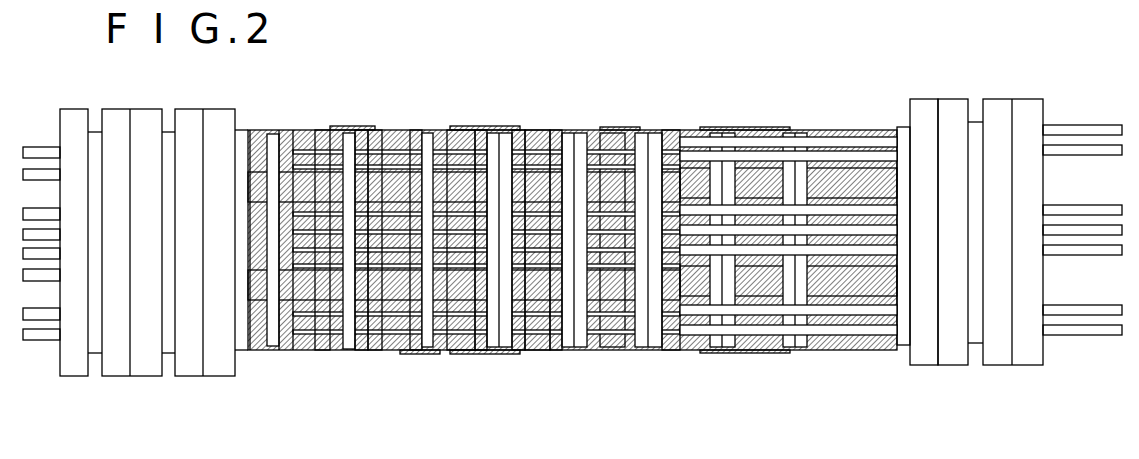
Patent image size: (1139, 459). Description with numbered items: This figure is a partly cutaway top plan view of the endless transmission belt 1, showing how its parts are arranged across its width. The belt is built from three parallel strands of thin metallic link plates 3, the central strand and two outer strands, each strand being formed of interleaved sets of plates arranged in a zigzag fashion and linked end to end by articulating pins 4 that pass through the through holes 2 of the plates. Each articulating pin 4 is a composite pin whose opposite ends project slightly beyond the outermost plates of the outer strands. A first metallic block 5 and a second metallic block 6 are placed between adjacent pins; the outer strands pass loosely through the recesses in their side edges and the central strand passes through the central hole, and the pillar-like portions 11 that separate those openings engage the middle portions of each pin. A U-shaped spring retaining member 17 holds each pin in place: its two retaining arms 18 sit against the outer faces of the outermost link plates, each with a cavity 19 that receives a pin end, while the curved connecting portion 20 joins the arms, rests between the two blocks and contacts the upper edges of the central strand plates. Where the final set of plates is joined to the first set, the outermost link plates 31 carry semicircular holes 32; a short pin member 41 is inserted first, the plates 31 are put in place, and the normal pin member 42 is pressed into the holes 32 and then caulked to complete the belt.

The endless transmission belt 1 is at (696, 98).
The through hole 2 is at (455, 132).
The link plate 3 is at (607, 135).
The articulating pin 4 is at (582, 137).
The first metallic block 5 is at (953, 103).
The second metallic block 6 is at (923, 103).
The pillar-like portion 11 is at (478, 132).
The retaining member 17 is at (975, 122).
The retaining arm 18 is at (820, 345).
The cavity 19 is at (878, 345).
The connecting portion 20 is at (907, 345).
The outermost link plate 31 is at (317, 135).
The semicircular hole 32 is at (373, 130).
The short pin member 41 is at (288, 140).
The normal pin member 42 is at (270, 137).